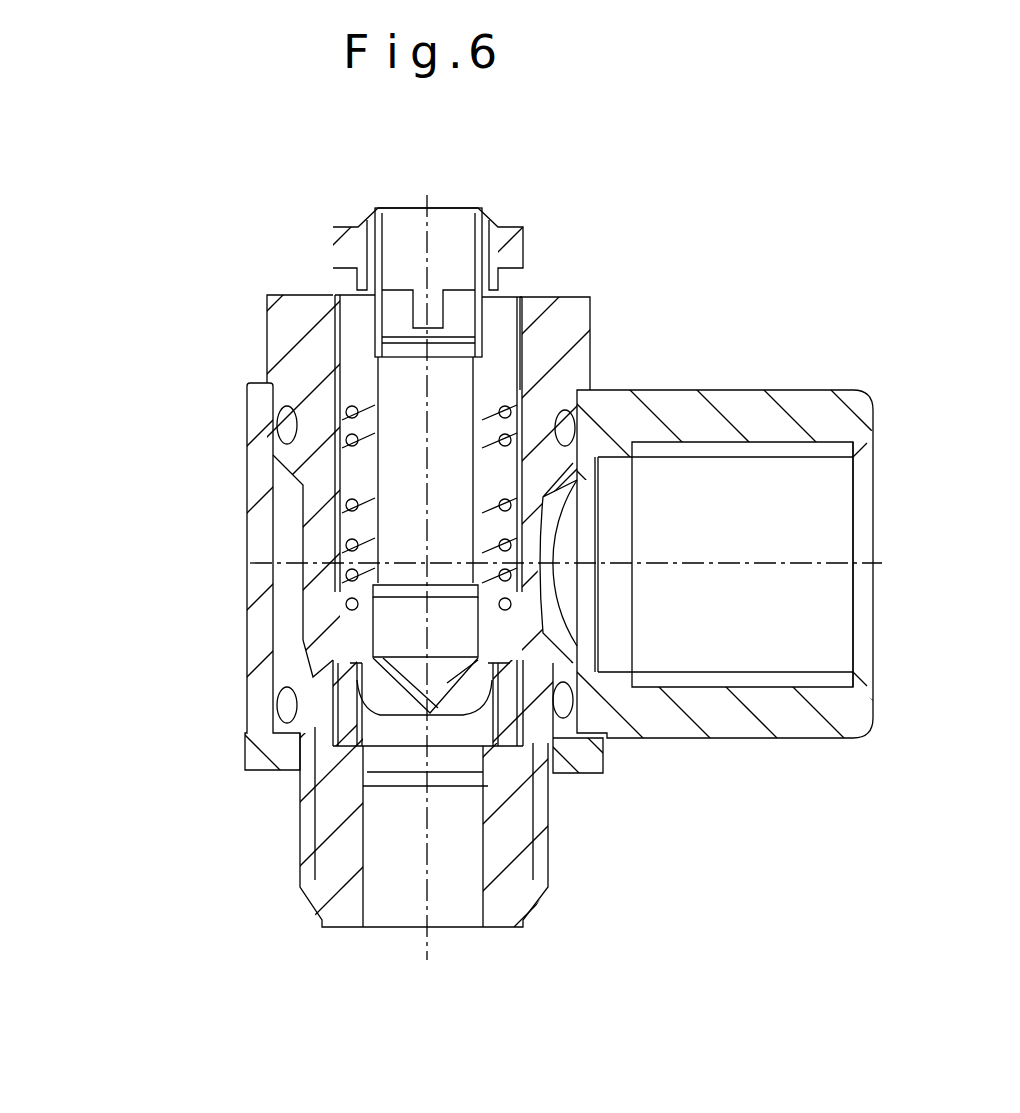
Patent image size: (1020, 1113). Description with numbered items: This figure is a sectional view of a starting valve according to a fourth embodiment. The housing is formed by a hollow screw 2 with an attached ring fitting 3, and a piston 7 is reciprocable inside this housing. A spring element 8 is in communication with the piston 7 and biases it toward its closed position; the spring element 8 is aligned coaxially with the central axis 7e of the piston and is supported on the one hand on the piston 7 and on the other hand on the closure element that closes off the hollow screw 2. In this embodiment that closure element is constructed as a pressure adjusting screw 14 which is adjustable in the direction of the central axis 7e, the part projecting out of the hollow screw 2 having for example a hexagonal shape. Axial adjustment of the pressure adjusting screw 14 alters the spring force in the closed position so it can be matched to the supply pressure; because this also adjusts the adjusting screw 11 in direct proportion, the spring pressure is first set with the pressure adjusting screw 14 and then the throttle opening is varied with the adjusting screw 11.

The pressure adjusting screw 14 is at (335, 255).
The adjusting screw 11 is at (397, 317).
The hollow screw 2 is at (303, 382).
The spring element 8 is at (342, 515).
The piston 7 is at (405, 540).
The central axis 7e is at (418, 900).
The ring fitting 3 is at (645, 712).